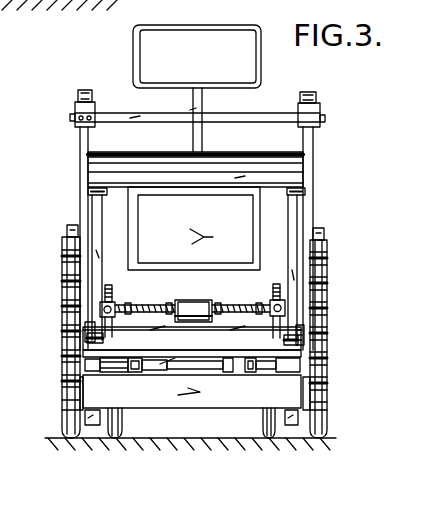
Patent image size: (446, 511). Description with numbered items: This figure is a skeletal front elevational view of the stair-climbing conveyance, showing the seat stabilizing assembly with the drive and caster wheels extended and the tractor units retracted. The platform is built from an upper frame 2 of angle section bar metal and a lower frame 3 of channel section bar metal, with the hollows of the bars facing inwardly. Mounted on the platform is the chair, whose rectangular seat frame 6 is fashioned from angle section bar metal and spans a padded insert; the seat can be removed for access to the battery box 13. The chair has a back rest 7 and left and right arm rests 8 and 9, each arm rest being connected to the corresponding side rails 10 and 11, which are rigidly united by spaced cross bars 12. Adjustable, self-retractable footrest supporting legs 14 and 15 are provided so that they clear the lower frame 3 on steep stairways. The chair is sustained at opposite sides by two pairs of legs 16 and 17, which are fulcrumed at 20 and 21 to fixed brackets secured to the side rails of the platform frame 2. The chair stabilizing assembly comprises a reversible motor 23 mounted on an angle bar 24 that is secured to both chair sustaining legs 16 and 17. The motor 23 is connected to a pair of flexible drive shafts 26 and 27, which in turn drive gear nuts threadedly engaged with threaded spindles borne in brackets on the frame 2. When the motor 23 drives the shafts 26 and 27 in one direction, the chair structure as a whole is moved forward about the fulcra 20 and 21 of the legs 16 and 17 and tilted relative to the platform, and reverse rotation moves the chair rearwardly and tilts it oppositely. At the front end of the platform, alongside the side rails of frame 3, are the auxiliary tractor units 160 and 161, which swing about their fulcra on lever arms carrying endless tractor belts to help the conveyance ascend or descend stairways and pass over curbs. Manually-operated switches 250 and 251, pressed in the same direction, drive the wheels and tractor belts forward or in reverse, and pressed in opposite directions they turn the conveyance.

The upper frame 2 is at (248, 333).
The lower frame 3 is at (167, 398).
The seat frame 6 is at (210, 184).
The back rest 7 is at (261, 74).
The left arm rest 8 is at (316, 96).
The right arm rest 9 is at (77, 96).
The side rail 10 is at (312, 143).
The side rail 11 is at (80, 137).
The cross bars 12 is at (115, 117).
The battery box 13 is at (142, 240).
The footrest supporting leg 14 is at (292, 208).
The footrest supporting leg 15 is at (90, 202).
The chair sustaining legs 16 is at (295, 235).
The chair sustaining legs 17 is at (92, 232).
The fulcrum 20 is at (303, 340).
The fulcrum 21 is at (66, 335).
The reversible motor 23 is at (181, 300).
The angle bar 24 is at (180, 328).
The flexible drive shaft 26 is at (236, 304).
The flexible drive shaft 27 is at (135, 304).
The auxiliary tractor unit 160 is at (331, 290).
The auxiliary tractor unit 161 is at (58, 288).
The manually-operated switch 250 is at (98, 125).
The manually-operated switch 251 is at (75, 118).